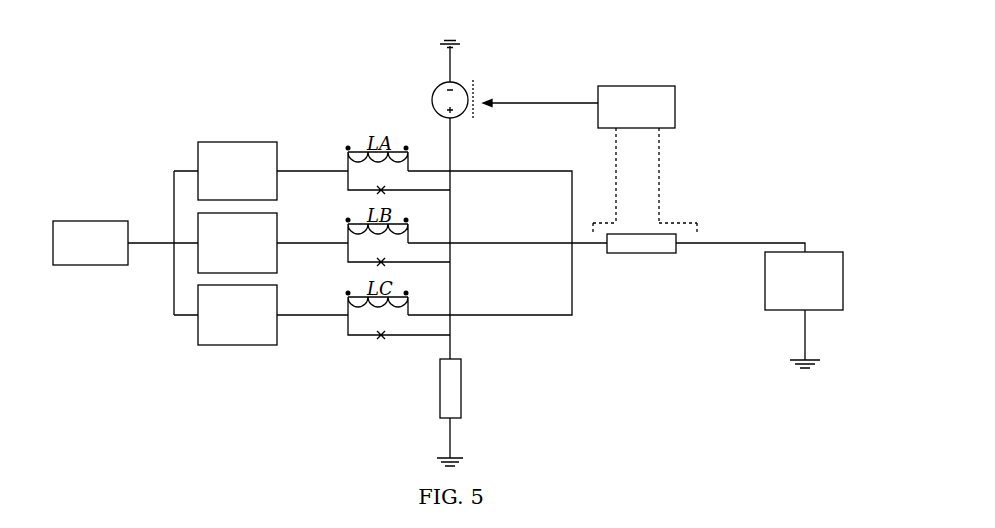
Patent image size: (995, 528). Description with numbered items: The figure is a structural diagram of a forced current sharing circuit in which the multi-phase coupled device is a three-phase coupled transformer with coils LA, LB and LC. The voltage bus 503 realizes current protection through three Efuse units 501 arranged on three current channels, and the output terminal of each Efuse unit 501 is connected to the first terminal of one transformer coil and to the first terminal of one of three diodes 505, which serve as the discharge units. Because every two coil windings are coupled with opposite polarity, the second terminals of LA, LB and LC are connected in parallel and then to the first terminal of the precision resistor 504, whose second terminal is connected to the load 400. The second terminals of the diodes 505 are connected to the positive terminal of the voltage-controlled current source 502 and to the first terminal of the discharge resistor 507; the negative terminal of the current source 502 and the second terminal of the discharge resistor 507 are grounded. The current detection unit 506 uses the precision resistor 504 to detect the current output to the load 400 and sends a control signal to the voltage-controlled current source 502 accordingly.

The load 400 is at (804, 310).
The Efuse unit 501 is at (237, 243).
The voltage-controlled current source 502 is at (433, 99).
The voltage bus 503 is at (90, 243).
The precision resistor 504 is at (641, 243).
The diode 505 is at (398, 243).
The current detection unit 506 is at (590, 159).
The discharge resistor 507 is at (468, 388).